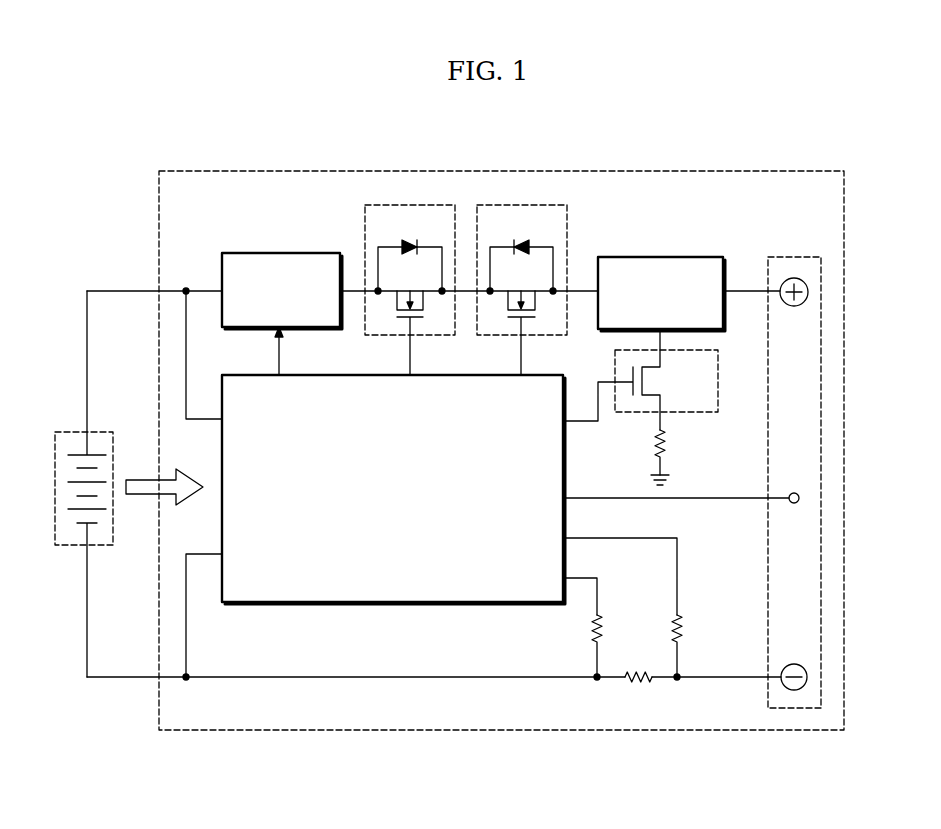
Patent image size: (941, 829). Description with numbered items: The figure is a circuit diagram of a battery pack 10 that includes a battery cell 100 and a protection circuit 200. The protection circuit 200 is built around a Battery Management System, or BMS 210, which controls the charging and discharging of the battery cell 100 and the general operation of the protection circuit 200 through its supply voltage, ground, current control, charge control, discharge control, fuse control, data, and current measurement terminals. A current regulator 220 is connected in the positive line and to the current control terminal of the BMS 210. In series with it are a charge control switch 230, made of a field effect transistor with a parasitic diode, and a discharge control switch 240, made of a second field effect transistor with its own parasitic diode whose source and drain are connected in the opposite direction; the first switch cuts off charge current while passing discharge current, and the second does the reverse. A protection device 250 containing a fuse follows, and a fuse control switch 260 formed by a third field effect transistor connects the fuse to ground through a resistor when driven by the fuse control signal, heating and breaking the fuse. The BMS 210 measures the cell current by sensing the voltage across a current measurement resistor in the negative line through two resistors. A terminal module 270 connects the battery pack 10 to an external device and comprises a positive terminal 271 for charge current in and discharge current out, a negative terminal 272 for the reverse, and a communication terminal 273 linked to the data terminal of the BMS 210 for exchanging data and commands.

The battery pack 10 is at (882, 201).
The battery cell 100 is at (103, 431).
The protection circuit 200 is at (663, 171).
The Battery Management System (BMS) 210 is at (452, 375).
The current regulator 220 is at (283, 254).
The charge control switch 230 is at (408, 205).
The discharge control switch 240 is at (522, 205).
The protection device 250 is at (665, 257).
The fuse control switch 260 is at (692, 412).
The terminal module 270 is at (794, 256).
The positive terminal 271 is at (794, 306).
The negative terminal 272 is at (794, 663).
The communication terminal 273 is at (794, 492).